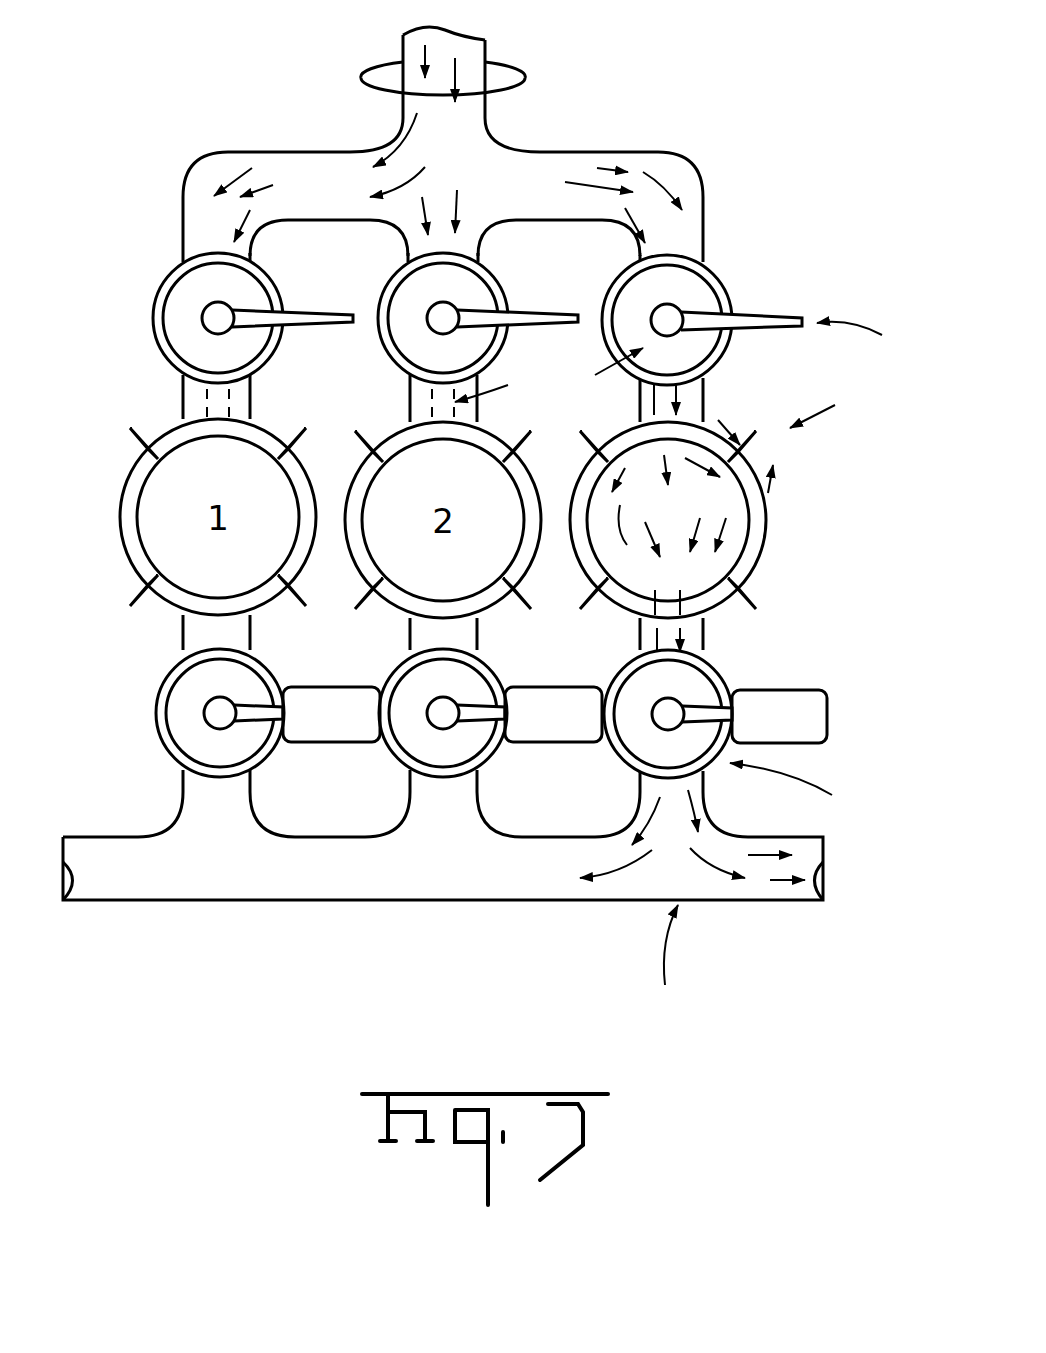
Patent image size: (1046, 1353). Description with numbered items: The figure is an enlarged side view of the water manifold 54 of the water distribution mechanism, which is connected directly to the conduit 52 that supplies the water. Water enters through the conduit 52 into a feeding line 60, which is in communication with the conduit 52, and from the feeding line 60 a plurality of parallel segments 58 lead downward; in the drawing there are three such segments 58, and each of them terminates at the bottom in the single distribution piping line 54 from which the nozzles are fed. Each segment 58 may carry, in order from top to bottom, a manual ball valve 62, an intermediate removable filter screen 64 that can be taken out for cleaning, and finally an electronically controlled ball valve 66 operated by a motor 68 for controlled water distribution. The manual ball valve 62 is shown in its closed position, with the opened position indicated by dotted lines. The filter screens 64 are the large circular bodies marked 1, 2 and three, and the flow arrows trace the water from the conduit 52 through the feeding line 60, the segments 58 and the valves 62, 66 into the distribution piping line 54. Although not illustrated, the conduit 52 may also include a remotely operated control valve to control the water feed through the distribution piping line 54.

The conduit 52 is at (487, 114).
The manifold 54 is at (698, 160).
The parallel segments 58 is at (183, 228).
The feeding line 60 is at (578, 165).
The manual ball valve 62 is at (725, 283).
The removable filter screen 64 is at (768, 517).
The electronically controlled ball valve 66 is at (723, 673).
The motor 68 is at (784, 697).
The plate for vessel 1 is at (308, 702).
The plate for vessel 2 is at (537, 702).